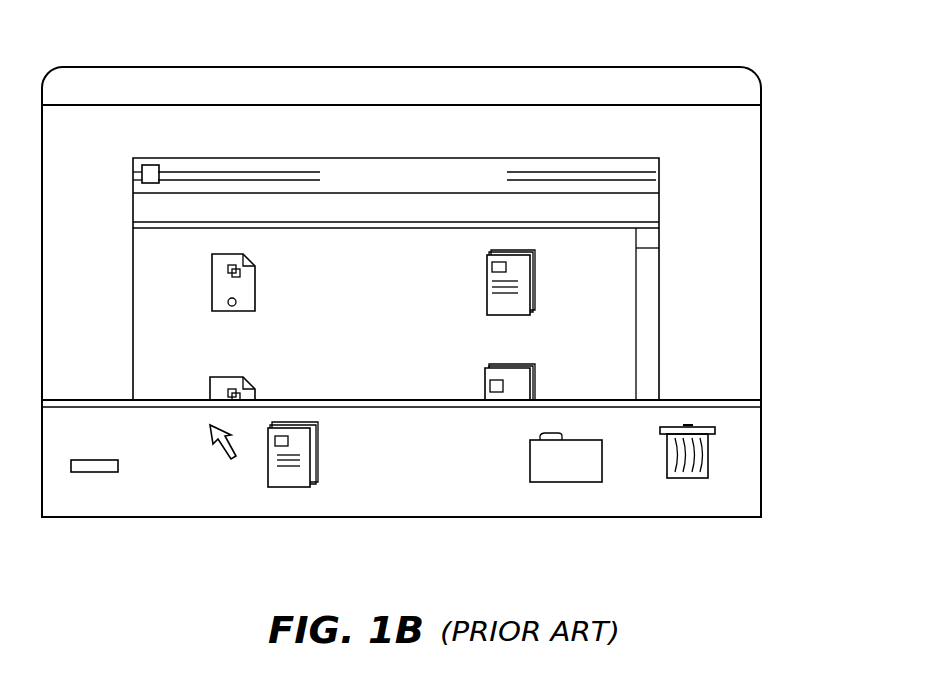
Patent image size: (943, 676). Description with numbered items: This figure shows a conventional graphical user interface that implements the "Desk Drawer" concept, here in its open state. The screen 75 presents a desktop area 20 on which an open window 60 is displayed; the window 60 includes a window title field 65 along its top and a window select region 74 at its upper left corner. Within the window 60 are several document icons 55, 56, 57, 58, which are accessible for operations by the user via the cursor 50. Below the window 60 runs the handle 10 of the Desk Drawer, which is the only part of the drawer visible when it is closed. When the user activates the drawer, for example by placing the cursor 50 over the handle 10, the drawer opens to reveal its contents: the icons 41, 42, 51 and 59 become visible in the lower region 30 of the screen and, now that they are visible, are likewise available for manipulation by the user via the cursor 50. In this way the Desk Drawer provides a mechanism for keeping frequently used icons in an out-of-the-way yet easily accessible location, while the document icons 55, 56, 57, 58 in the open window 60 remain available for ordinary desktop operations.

The desktop area 20 is at (692, 130).
The screen 75 is at (514, 66).
The handle 10 is at (450, 401).
The window 60 is at (525, 156).
The window title field 65 is at (363, 163).
The window select region 74 is at (133, 178).
The document icon 56 is at (248, 280).
The document icon 55 is at (523, 272).
The document icon 57 is at (252, 392).
The document icon 58 is at (522, 385).
The desktop area 30 is at (451, 483).
The icon 41 is at (103, 460).
The cursor 50 is at (223, 460).
The icon 51 is at (305, 447).
The icon 42 is at (530, 452).
The icon 59 is at (665, 447).